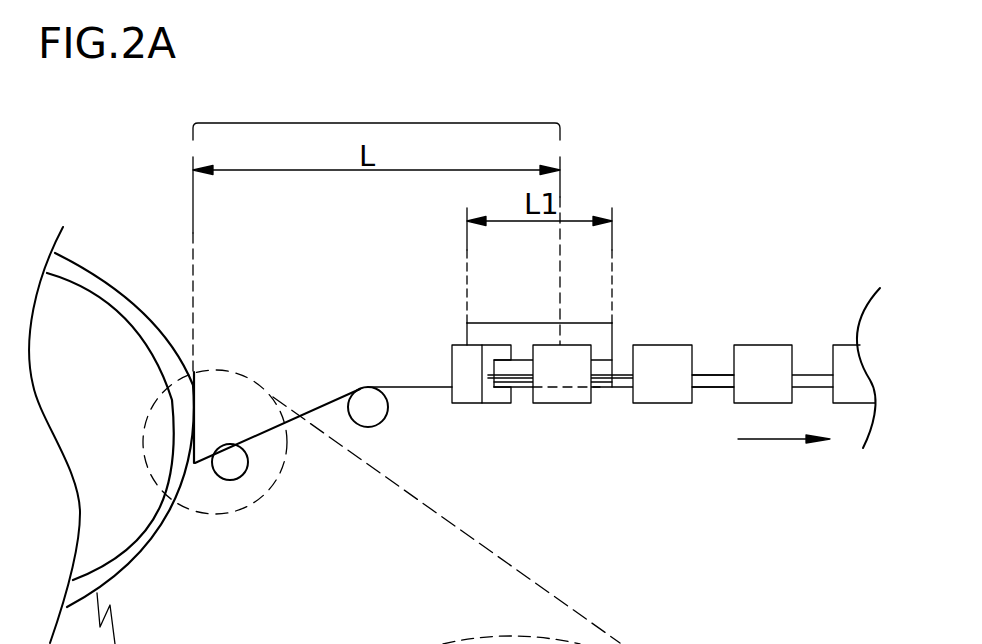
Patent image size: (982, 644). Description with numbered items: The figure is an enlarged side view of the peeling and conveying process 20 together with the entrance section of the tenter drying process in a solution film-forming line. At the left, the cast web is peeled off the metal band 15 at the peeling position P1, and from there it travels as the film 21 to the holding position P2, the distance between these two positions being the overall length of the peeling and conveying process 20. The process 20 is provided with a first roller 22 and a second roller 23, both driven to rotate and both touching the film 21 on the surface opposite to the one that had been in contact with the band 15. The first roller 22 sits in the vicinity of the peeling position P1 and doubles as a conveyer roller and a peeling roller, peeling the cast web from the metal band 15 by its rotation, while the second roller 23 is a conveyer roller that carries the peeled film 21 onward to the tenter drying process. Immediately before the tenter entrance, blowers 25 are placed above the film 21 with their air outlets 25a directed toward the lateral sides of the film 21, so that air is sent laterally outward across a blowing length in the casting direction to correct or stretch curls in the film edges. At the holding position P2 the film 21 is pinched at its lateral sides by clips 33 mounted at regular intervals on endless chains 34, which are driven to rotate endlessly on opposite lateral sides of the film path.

The metal band 15 is at (105, 277).
The peeling and conveying process 20 is at (377, 123).
The film 21 is at (313, 410).
The first roller 22 is at (230, 481).
The second roller 23 is at (367, 410).
The blowers 25 is at (507, 330).
The air outlets 25a is at (522, 383).
The clips 33 is at (495, 399).
The endless chains 34 is at (714, 387).
The peeling position P1 is at (195, 463).
The holding position P2 is at (565, 390).